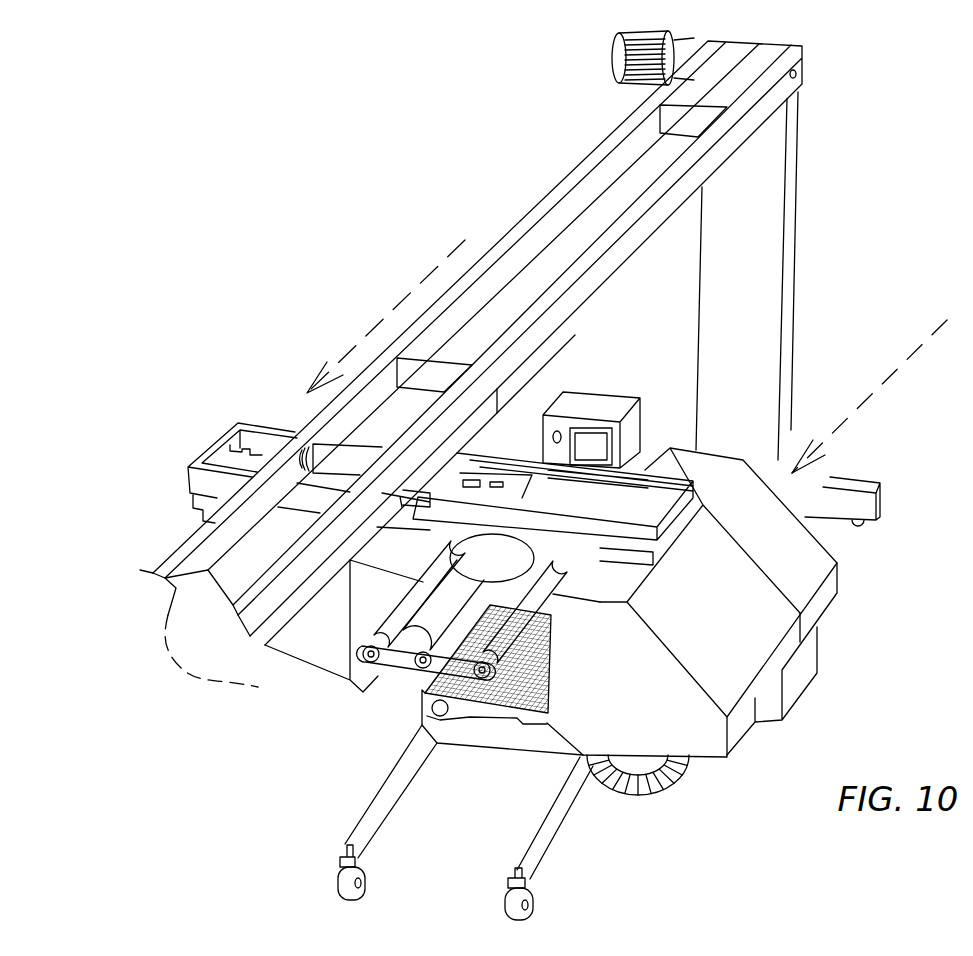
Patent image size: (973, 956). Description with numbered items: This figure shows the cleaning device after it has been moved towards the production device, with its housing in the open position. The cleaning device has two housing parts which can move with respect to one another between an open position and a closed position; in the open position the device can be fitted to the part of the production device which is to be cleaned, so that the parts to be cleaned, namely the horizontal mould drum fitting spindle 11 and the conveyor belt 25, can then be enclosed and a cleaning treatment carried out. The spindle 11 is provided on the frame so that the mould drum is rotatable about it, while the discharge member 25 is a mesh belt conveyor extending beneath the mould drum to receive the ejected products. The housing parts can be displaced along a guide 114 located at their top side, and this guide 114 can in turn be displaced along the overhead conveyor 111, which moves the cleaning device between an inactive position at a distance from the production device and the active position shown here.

The overhead conveyor 111 is at (175, 550).
The guide 114 is at (628, 503).
The discharge member 25 is at (483, 697).
The mould drum fitting spindle 11 is at (387, 672).